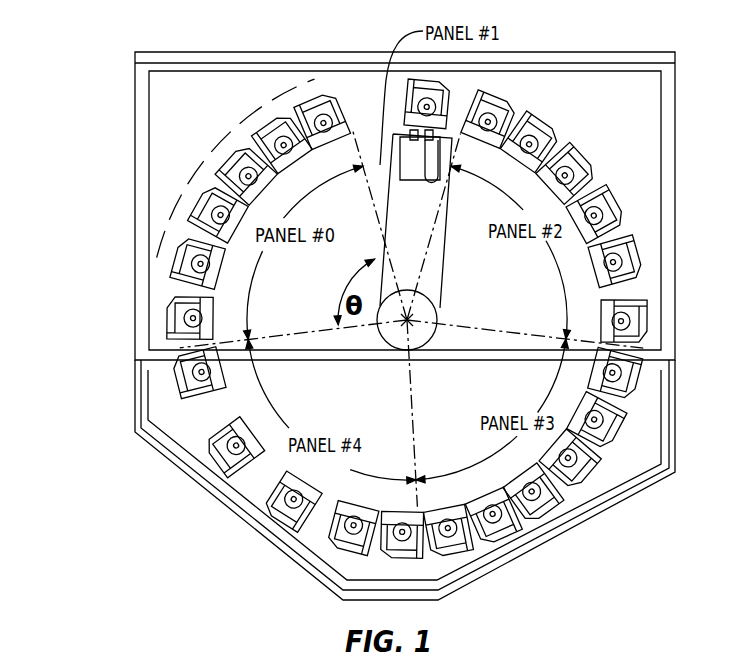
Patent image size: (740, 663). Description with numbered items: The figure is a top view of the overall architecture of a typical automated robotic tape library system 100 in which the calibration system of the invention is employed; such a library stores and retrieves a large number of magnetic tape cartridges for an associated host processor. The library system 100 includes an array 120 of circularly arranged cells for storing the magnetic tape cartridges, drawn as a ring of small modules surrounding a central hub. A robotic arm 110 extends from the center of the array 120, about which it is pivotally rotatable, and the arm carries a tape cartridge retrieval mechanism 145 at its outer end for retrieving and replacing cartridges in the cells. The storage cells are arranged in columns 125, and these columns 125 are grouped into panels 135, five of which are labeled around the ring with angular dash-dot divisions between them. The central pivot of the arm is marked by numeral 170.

The automated robotic tape library system 100 is at (118, 62).
The robotic arm 110 is at (444, 255).
The array 120 is at (188, 210).
The columns 125 is at (230, 153).
The panels 135 is at (363, 160).
The tape cartridge retrieval mechanism 145 is at (428, 185).
The pivot axis 170 is at (412, 328).